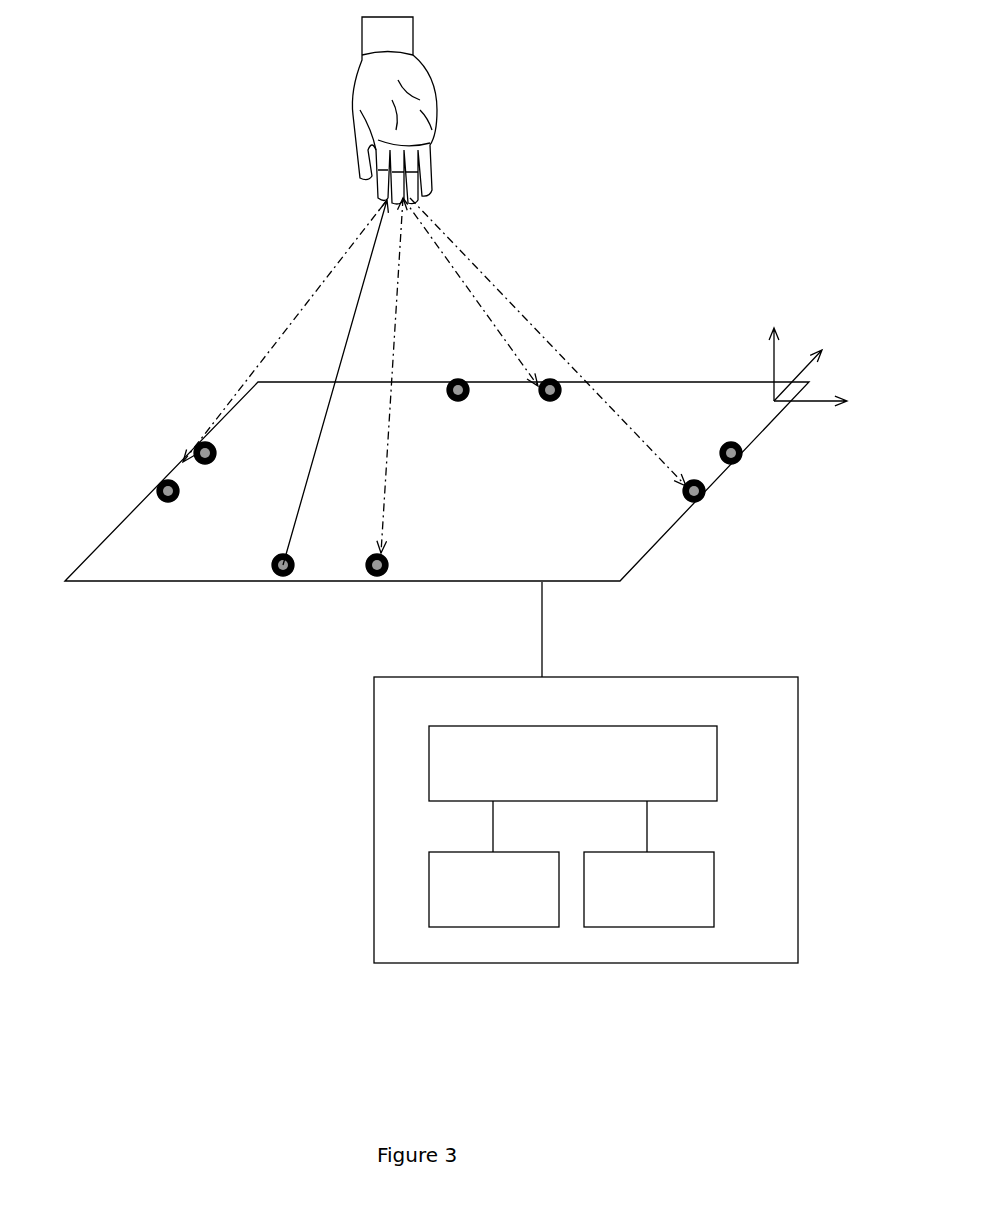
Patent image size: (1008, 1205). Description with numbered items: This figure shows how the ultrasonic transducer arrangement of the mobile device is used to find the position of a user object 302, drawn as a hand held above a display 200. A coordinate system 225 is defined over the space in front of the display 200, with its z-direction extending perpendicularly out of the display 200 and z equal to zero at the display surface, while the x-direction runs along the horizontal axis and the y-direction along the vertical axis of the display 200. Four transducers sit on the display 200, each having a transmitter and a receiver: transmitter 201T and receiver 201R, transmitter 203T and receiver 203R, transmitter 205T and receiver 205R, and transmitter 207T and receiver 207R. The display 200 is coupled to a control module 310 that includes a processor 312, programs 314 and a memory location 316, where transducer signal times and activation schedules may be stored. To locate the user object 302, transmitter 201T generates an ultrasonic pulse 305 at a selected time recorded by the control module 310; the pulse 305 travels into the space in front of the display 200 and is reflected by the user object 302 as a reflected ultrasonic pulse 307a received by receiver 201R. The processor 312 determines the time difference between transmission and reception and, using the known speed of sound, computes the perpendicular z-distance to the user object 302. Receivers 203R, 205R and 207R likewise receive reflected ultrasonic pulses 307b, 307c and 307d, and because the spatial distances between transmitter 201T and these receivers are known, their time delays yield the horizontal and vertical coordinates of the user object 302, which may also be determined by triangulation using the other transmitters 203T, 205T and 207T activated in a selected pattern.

The user object 302 is at (352, 83).
The display 200 is at (674, 378).
The coordinate system 225 is at (825, 274).
The transmitter 203T is at (161, 447).
The receiver 203R is at (118, 493).
The transmitter 205T is at (454, 416).
The receiver 205R is at (543, 416).
The transmitter 207T is at (769, 460).
The receiver 207R is at (727, 508).
The transmitter 201T is at (281, 593).
The receiver 201R is at (382, 593).
The ultrasonic pulse 305 is at (315, 472).
The reflected ultrasonic pulse 307a is at (388, 475).
The reflected ultrasonic pulse 307b is at (277, 343).
The reflected ultrasonic pulse 307c is at (488, 315).
The reflected ultrasonic pulse 307d is at (553, 353).
The control module 310 is at (374, 800).
The processor 312 is at (647, 726).
The programs 314 is at (495, 927).
The memory location 316 is at (655, 927).